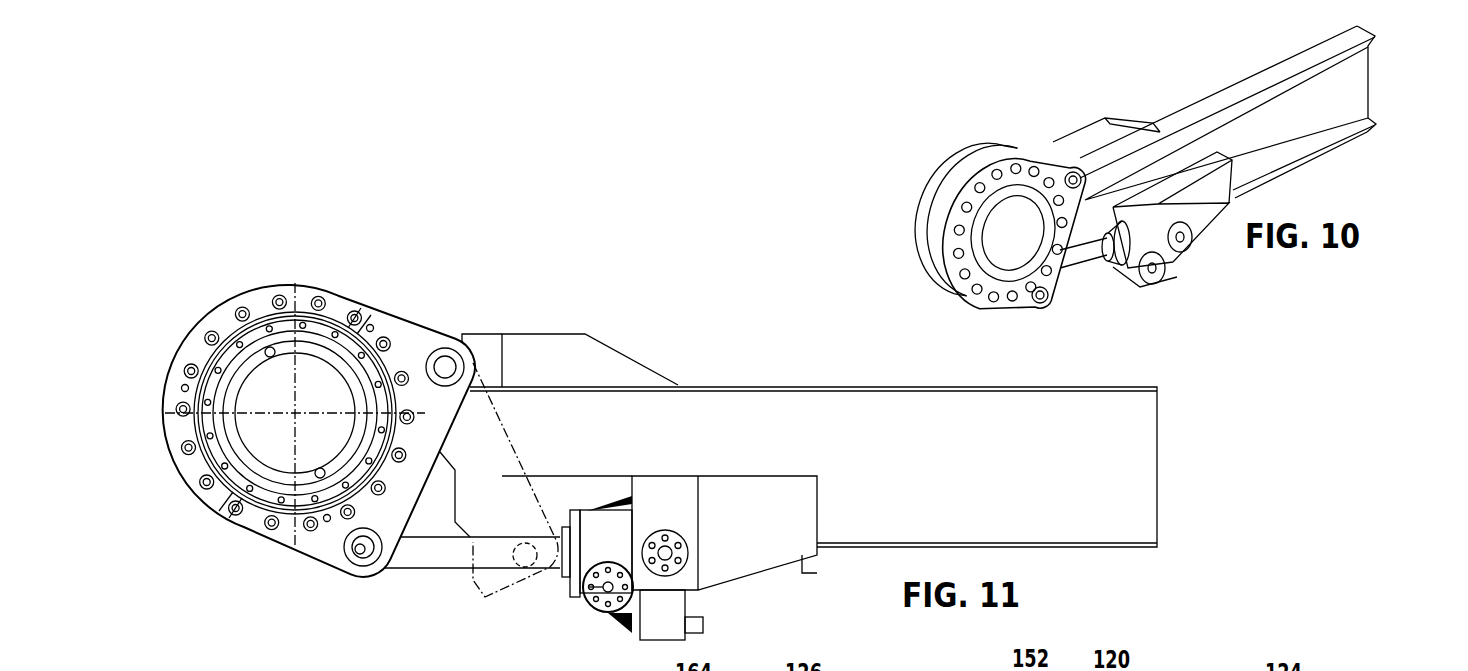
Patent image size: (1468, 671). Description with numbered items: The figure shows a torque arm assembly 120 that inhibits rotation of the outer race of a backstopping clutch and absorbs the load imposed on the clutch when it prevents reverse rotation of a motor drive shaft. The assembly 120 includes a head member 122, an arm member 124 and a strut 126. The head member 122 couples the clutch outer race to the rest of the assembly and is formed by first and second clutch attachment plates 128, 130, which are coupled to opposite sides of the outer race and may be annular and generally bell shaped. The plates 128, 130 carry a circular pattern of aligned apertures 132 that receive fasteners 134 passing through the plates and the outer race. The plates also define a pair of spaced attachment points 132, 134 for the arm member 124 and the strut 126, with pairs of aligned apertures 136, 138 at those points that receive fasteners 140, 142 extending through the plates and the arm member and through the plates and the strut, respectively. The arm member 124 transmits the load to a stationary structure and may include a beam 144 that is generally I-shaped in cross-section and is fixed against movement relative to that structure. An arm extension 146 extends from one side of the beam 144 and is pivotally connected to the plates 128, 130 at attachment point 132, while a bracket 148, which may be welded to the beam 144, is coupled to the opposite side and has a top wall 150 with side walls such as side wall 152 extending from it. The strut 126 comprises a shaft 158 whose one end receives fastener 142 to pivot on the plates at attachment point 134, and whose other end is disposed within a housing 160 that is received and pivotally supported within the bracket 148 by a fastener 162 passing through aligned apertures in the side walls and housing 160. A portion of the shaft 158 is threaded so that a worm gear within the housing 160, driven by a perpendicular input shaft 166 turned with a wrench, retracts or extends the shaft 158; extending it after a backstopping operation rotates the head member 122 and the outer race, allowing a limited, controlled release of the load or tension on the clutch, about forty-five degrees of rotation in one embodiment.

In FIG. 11, the torque arm assembly 120 is at (768, 337).
In FIG. 10, the torque arm assembly 120 is at (1042, 117).
In FIG. 11, the head member 122 is at (207, 297).
In FIG. 10, the head member 122 is at (923, 163).
In FIG. 11, the arm member 124 is at (1130, 383).
In FIG. 10, the arm member 124 is at (1350, 147).
In FIG. 11, the strut 126 is at (440, 592).
In FIG. 10, the strut 126 is at (1113, 275).
In FIG. 11, the first clutch attachment plate 128 is at (193, 465).
In FIG. 10, the first clutch attachment plate 128 is at (950, 260).
In FIG. 10, the second clutch attachment plate 130 is at (973, 145).
In FIG. 11, the aligned apertures / first attachment point 132 is at (437, 347).
In FIG. 10, the aligned apertures / first attachment point 132 is at (1073, 165).
In FIG. 11, the fasteners / second attachment point 134 is at (368, 568).
In FIG. 10, the fasteners / second attachment point 134 is at (1040, 308).
In FIG. 11, the aligned apertures 136 is at (503, 332).
In FIG. 11, the aligned apertures 138 is at (360, 550).
In FIG. 11, the fastener 140 is at (452, 338).
In FIG. 11, the fastener 142 is at (345, 562).
In FIG. 11, the beam 144 is at (1105, 525).
In FIG. 11, the arm extension 146 is at (597, 362).
In FIG. 11, the bracket 148 is at (838, 497).
In FIG. 10, the top wall 150 is at (1195, 175).
In FIG. 11, the side wall 152 is at (737, 560).
In FIG. 11, the shaft 158 is at (490, 548).
In FIG. 11, the housing 160 is at (597, 530).
In FIG. 11, the fastener 162 is at (670, 553).
In FIG. 11, the input shaft 166 is at (587, 587).